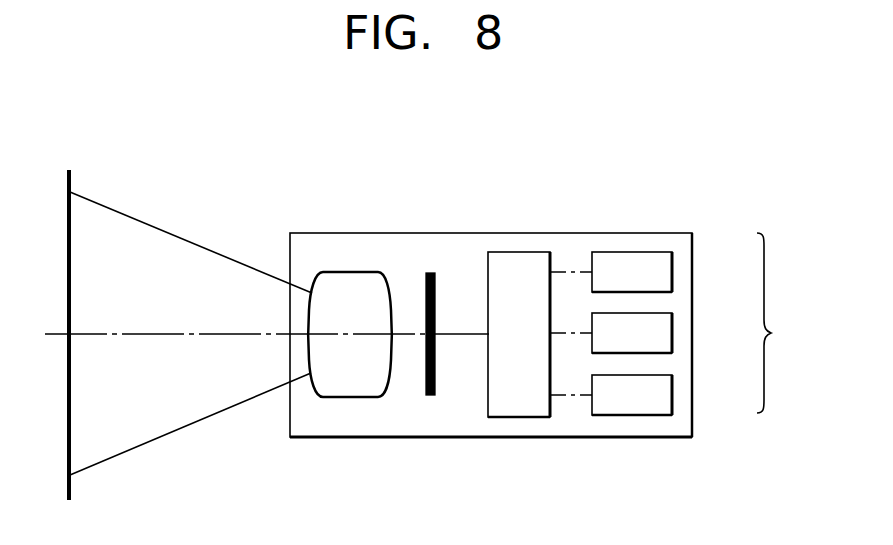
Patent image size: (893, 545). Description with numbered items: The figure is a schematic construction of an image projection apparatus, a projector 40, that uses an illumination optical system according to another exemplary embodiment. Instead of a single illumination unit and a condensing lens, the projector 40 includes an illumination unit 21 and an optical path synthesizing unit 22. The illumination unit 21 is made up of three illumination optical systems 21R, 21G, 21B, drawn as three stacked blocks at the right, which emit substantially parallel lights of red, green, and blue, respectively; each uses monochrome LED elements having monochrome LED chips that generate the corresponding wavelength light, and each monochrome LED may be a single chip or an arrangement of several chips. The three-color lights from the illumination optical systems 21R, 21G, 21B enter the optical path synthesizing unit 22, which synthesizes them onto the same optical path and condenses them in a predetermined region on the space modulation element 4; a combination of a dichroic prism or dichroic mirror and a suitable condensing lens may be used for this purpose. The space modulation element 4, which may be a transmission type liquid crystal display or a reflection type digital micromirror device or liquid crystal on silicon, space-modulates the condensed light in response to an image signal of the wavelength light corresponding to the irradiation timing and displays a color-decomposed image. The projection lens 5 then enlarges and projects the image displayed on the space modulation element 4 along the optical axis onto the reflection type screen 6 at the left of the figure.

The reflection type screen 6 is at (72, 487).
The projector 40 is at (431, 206).
The projection lens 5 is at (385, 290).
The space modulation element 4 is at (435, 288).
The optical path synthesizing unit 22 is at (521, 252).
The illumination optical system 21R is at (674, 272).
The illumination optical system 21G is at (674, 334).
The illumination optical system 21B is at (674, 395).
The illumination unit 21 is at (778, 323).